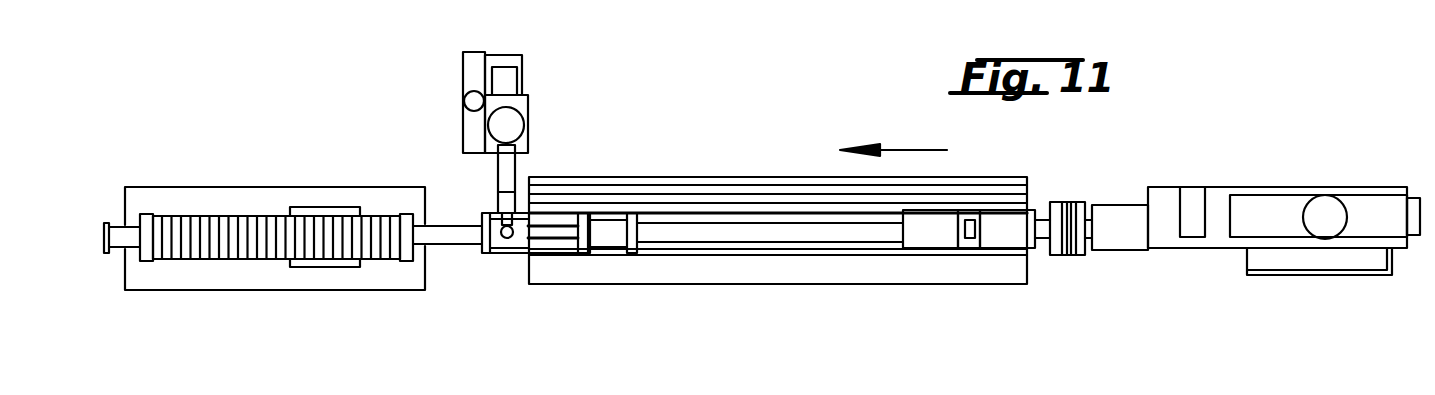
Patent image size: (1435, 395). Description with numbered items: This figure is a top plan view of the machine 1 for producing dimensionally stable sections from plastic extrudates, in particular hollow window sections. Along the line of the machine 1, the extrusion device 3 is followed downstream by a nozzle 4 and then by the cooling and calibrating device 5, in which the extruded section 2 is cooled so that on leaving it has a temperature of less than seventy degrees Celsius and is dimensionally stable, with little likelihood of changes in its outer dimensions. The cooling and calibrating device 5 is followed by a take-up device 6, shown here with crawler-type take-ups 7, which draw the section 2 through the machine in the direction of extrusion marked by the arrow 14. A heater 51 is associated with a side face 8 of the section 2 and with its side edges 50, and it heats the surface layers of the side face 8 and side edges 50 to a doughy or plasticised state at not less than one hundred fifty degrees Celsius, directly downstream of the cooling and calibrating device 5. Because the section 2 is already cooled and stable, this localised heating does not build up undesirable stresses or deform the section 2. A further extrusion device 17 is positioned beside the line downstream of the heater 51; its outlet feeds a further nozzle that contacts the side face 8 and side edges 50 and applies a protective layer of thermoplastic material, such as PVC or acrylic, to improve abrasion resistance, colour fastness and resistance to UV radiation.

The machine 1 is at (767, 131).
The section 2 is at (1042, 226).
The extrusion device 3 is at (1244, 168).
The nozzle 4 is at (1083, 187).
The cooling and calibrating device 5 is at (691, 192).
The take-up device 6 is at (263, 170).
The crawler-type take-ups 7 is at (178, 219).
The side face 8 is at (445, 242).
The arrow 14 is at (917, 150).
The further extrusion device 17 is at (511, 165).
The side edges 50 is at (457, 222).
The heater 51 is at (548, 233).